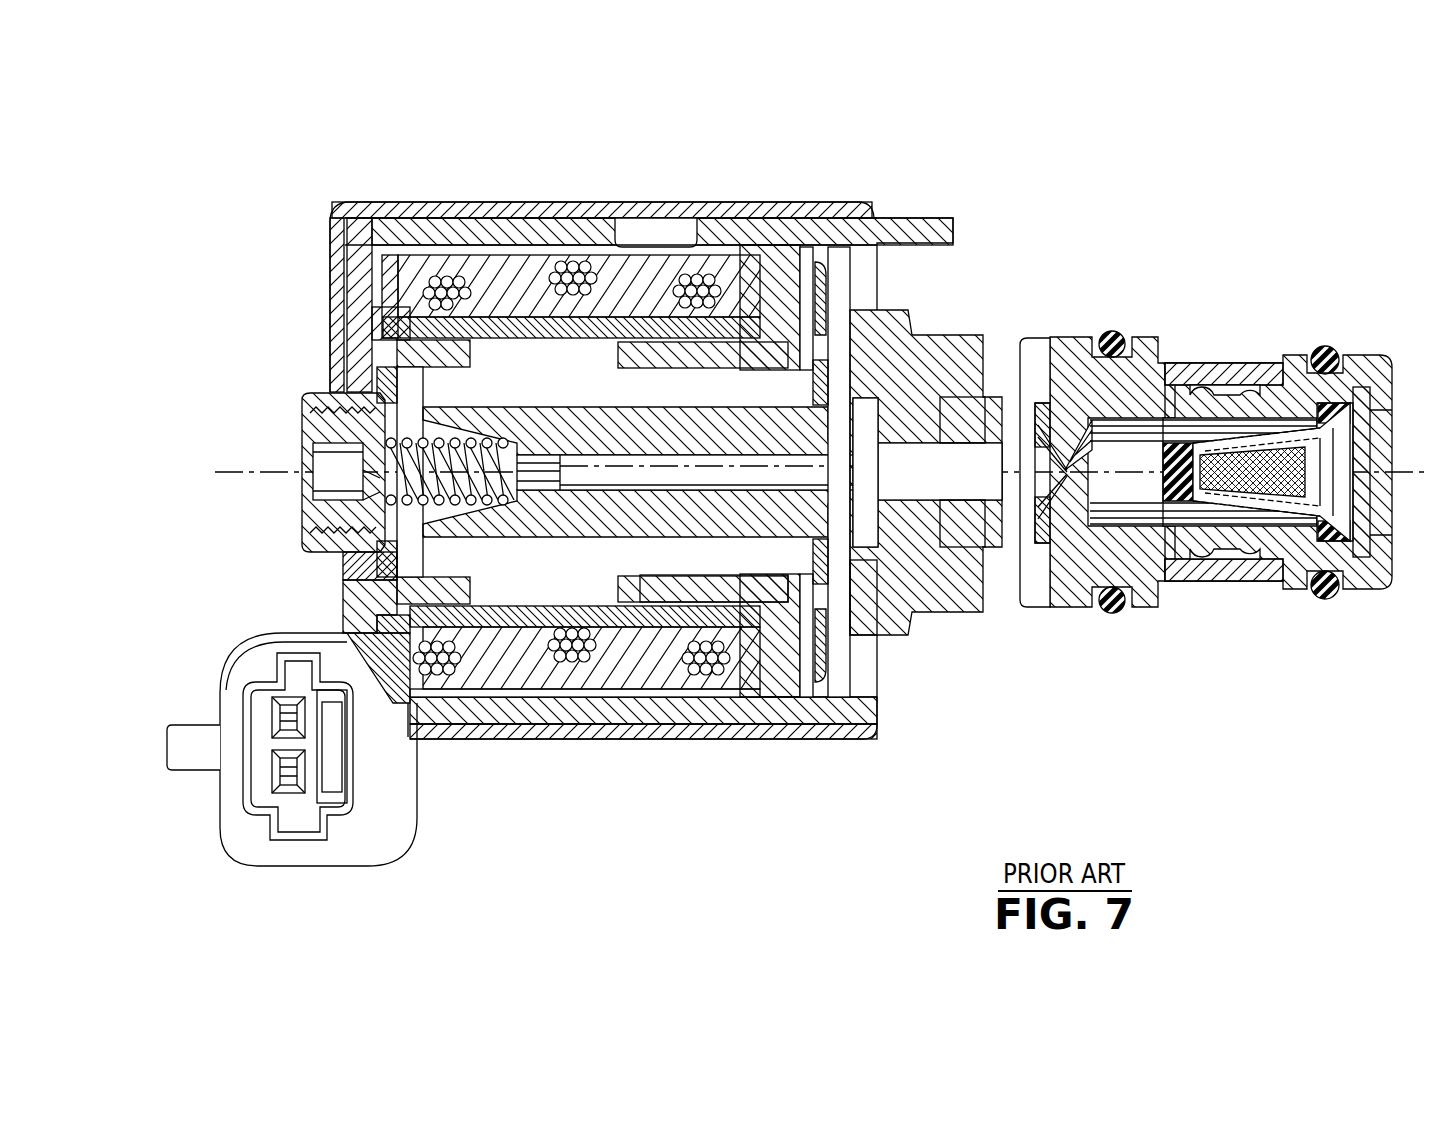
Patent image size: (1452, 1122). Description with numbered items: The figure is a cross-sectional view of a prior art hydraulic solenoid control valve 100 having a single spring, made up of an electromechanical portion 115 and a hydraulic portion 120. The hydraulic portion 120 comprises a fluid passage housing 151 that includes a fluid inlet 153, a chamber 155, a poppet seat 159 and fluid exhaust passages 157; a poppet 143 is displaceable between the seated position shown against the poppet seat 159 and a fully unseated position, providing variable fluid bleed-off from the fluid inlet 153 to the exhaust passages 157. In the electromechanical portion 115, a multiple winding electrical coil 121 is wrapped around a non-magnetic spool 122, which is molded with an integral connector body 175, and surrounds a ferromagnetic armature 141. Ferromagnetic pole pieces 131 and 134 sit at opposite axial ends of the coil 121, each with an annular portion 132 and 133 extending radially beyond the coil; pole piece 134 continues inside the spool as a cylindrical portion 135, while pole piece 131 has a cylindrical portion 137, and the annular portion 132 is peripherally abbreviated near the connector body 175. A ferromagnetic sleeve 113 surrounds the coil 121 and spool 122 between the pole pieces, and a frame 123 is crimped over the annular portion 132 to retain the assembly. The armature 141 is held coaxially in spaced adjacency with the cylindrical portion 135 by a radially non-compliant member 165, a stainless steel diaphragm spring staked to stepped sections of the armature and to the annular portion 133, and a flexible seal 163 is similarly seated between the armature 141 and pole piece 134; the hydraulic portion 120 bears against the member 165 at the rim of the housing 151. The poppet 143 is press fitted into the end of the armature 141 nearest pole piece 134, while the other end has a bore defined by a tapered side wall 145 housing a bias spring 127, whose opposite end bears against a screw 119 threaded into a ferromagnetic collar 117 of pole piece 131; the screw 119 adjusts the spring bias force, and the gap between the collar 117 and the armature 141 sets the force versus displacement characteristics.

The hydraulic solenoid control valve 100 is at (800, 818).
The ferromagnetic sleeve 113 is at (470, 715).
The electromechanical portion 115 is at (296, 157).
The ferromagnetic collar 117 is at (332, 556).
The screw 119 is at (315, 505).
The hydraulic portion 120 is at (978, 710).
The electrical coil 121 is at (575, 675).
The spool 122 is at (410, 300).
The frame 123 is at (546, 725).
The bias spring 127 is at (342, 592).
The pole piece 131 is at (358, 330).
The annular portion 132 is at (337, 285).
The annular portion 133 is at (768, 700).
The pole piece 134 is at (772, 268).
The cylindrical portion 135 is at (640, 592).
The cylindrical portion 137 is at (440, 345).
The armature 141 is at (866, 430).
The poppet 143 is at (963, 430).
The tapered side wall 145 is at (500, 405).
The fluid passage housing 151 is at (912, 338).
The fluid inlet 153 is at (1200, 545).
The chamber 155 is at (872, 595).
The fluid exhaust passages 157 is at (1028, 400).
The poppet seat 159 is at (1080, 462).
The flexible seal 163 is at (790, 428).
The radially non-compliant member 165 is at (835, 605).
The connector body 175 is at (347, 827).